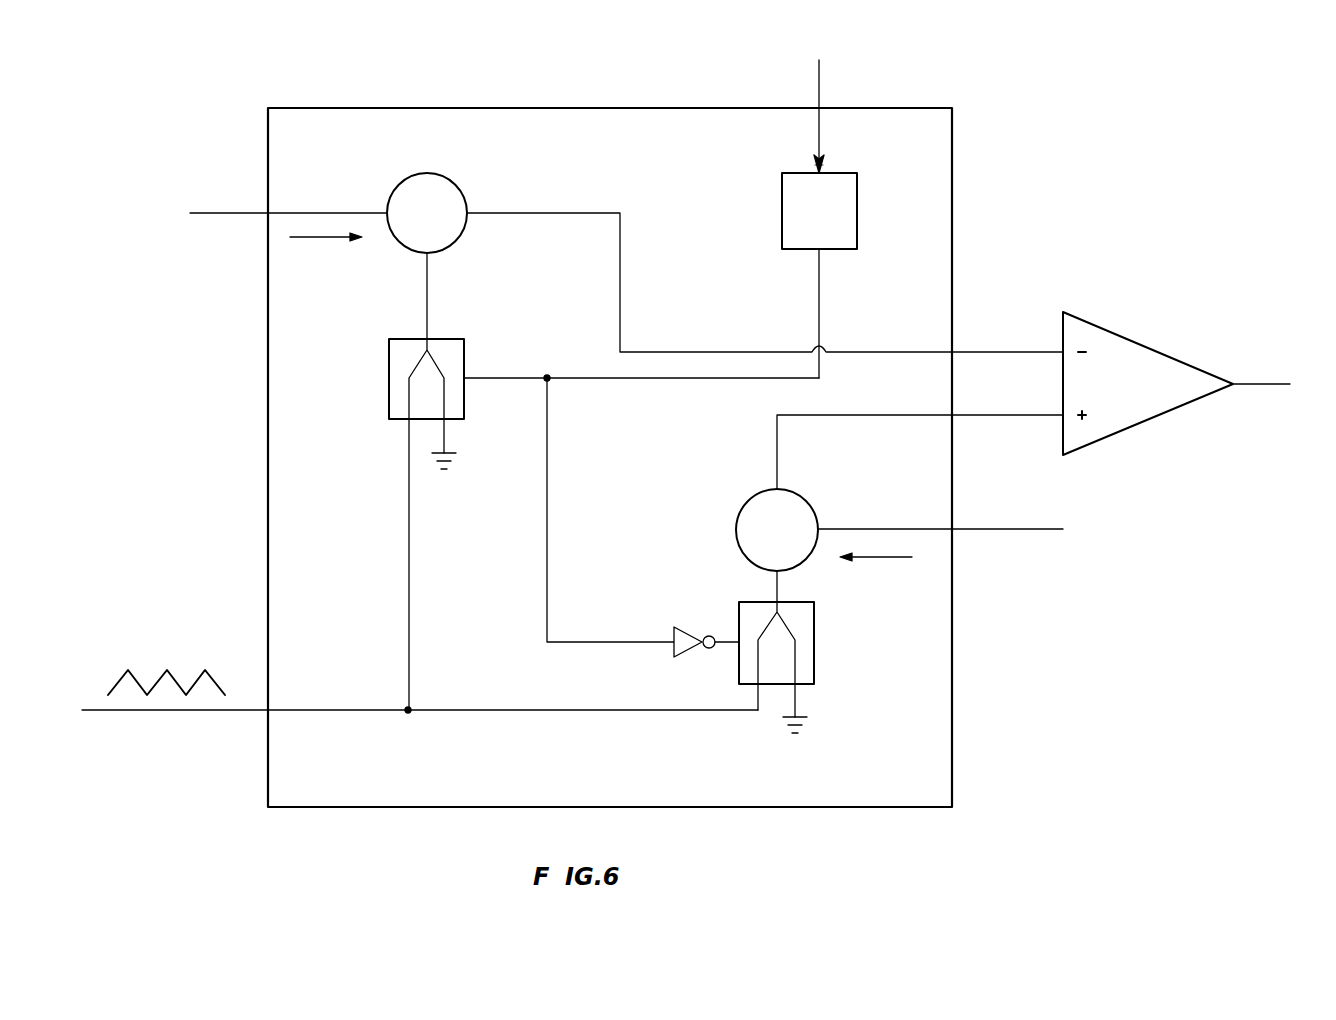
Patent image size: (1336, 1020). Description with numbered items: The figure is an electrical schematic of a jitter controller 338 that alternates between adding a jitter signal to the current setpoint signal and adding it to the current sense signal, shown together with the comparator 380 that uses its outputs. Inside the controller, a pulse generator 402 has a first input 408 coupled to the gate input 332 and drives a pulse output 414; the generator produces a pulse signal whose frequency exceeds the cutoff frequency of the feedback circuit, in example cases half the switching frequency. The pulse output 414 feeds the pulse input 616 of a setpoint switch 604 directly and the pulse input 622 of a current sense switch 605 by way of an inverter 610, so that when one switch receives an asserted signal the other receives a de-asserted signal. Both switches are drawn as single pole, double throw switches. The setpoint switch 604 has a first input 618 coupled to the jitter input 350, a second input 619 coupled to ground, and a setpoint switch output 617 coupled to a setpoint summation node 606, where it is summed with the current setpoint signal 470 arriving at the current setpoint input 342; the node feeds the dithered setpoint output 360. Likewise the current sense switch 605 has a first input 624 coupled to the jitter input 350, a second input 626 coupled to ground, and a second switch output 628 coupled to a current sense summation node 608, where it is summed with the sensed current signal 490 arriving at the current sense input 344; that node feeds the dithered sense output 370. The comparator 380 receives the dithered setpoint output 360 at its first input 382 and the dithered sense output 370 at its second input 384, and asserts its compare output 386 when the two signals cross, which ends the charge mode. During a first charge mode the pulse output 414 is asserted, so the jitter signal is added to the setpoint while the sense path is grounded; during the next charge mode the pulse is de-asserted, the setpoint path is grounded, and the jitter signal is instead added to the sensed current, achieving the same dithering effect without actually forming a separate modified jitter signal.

The jitter controller 338 is at (576, 182).
The gate input 332 is at (822, 108).
The first input 408 is at (822, 171).
The pulse generator 402 is at (782, 201).
The pulse output 414 is at (822, 249).
The current setpoint input 342 is at (266, 215).
The current setpoint signal 470 is at (318, 238).
The setpoint summation node 606 is at (456, 240).
The setpoint switch output 617 is at (430, 338).
The setpoint switch 604 is at (389, 360).
The pulse input 616 is at (466, 375).
The first input 618 is at (407, 421).
The second input 619 is at (446, 421).
The dithered setpoint output 360 is at (953, 350).
The first input 382 is at (1060, 350).
The comparator 380 is at (1140, 365).
The compare output 386 is at (1235, 382).
The dithered sense output 370 is at (953, 417).
The second input 384 is at (1060, 418).
The current sense summation node 608 is at (740, 510).
The current sense input 344 is at (953, 531).
The sensed current signal 490 is at (870, 558).
The second switch output 628 is at (778, 603).
The current sense switch 605 is at (815, 638).
The second input 626 is at (797, 686).
The pulse input 622 is at (739, 637).
The inverter 610 is at (686, 655).
The first input 624 is at (760, 686).
The jitter input 350 is at (266, 712).